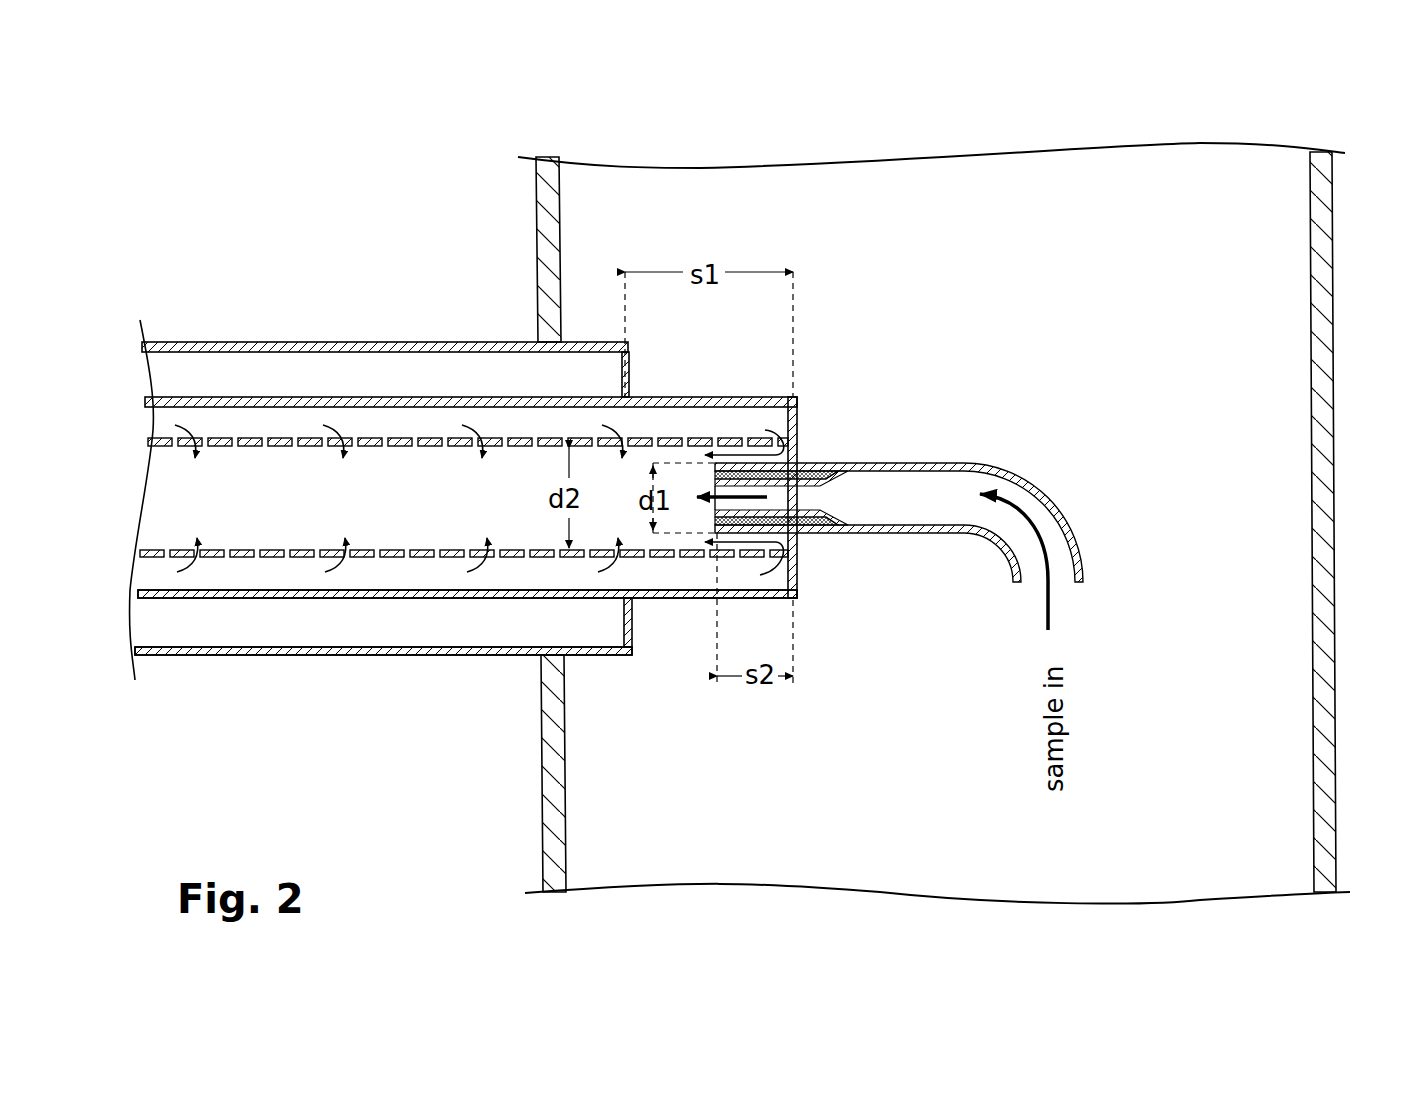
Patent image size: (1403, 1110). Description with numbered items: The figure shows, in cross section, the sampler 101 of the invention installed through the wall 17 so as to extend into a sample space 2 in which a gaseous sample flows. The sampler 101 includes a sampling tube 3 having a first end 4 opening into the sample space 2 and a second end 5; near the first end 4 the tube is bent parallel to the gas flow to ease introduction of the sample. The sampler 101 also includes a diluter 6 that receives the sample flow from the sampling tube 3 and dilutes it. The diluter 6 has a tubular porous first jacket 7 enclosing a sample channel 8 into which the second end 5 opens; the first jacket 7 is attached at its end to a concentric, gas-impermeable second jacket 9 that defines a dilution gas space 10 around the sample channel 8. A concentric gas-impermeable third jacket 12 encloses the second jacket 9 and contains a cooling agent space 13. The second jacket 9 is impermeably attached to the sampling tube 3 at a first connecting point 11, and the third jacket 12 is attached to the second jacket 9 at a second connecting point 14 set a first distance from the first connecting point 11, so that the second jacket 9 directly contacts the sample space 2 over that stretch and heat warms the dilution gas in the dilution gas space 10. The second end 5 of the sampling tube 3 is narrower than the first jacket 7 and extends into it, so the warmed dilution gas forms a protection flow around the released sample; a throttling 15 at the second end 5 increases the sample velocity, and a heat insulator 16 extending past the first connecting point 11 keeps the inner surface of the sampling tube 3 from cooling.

The sampler 101 is at (287, 246).
The sample space 2 is at (1238, 338).
The sampling tube 3 is at (927, 473).
The first end 4 is at (1083, 585).
The second end 5 is at (717, 520).
The diluter 6 is at (695, 397).
The first jacket 7 is at (532, 557).
The sample channel 8 is at (248, 503).
The second jacket 9 is at (405, 597).
The dilution gas space 10 is at (257, 428).
The first connecting point 11 is at (800, 462).
The third jacket 12 is at (283, 655).
The cooling agent space 13 is at (490, 383).
The second connecting point 14 is at (635, 397).
The throttling 15 is at (800, 497).
The heat insulator 16 is at (810, 533).
The wall 17 is at (553, 757).